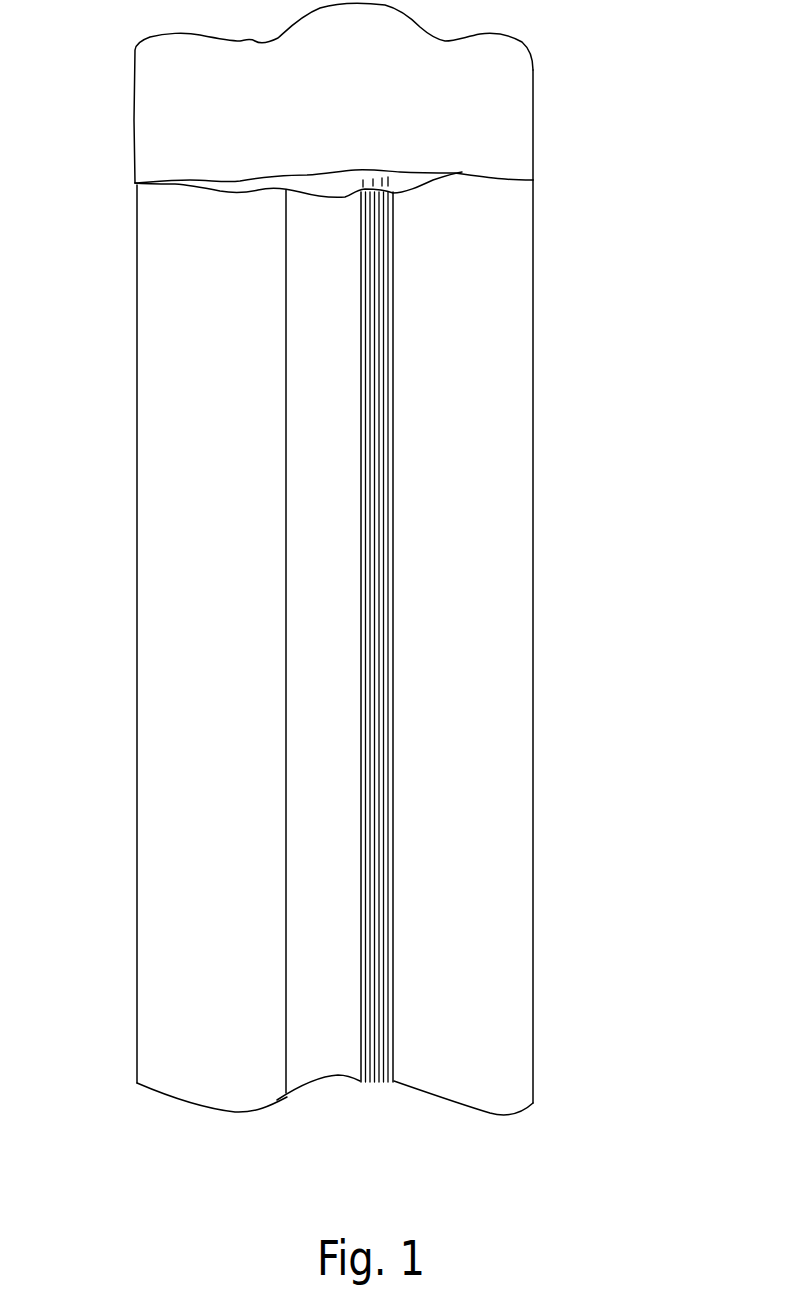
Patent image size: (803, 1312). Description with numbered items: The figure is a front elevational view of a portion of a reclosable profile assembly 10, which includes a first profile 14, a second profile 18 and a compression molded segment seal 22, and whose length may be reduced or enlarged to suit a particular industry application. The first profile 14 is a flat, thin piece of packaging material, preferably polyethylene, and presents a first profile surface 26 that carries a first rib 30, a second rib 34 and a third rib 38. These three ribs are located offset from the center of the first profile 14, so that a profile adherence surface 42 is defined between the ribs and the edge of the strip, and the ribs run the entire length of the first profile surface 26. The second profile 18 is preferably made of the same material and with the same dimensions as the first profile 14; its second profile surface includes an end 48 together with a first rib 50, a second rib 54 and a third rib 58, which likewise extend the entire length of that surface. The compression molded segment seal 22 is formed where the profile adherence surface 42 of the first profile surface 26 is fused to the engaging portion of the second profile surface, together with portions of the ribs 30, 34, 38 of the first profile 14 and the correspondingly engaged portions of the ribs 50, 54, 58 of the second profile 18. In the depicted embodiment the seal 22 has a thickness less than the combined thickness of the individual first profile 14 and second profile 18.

The profile assembly 10 is at (703, 728).
The first profile 14 is at (535, 402).
The second profile 18 is at (150, 358).
The compression molded segment seal 22 is at (483, 113).
The first profile surface 26 is at (535, 870).
The first rib 30 is at (358, 1080).
The second rib 34 is at (370, 1082).
The third rib 38 is at (383, 1082).
The profile adherence surface 42 is at (272, 927).
The end 48 is at (170, 831).
The first rib 50 is at (367, 1082).
The second rib 54 is at (378, 1082).
The third rib 58 is at (395, 1063).